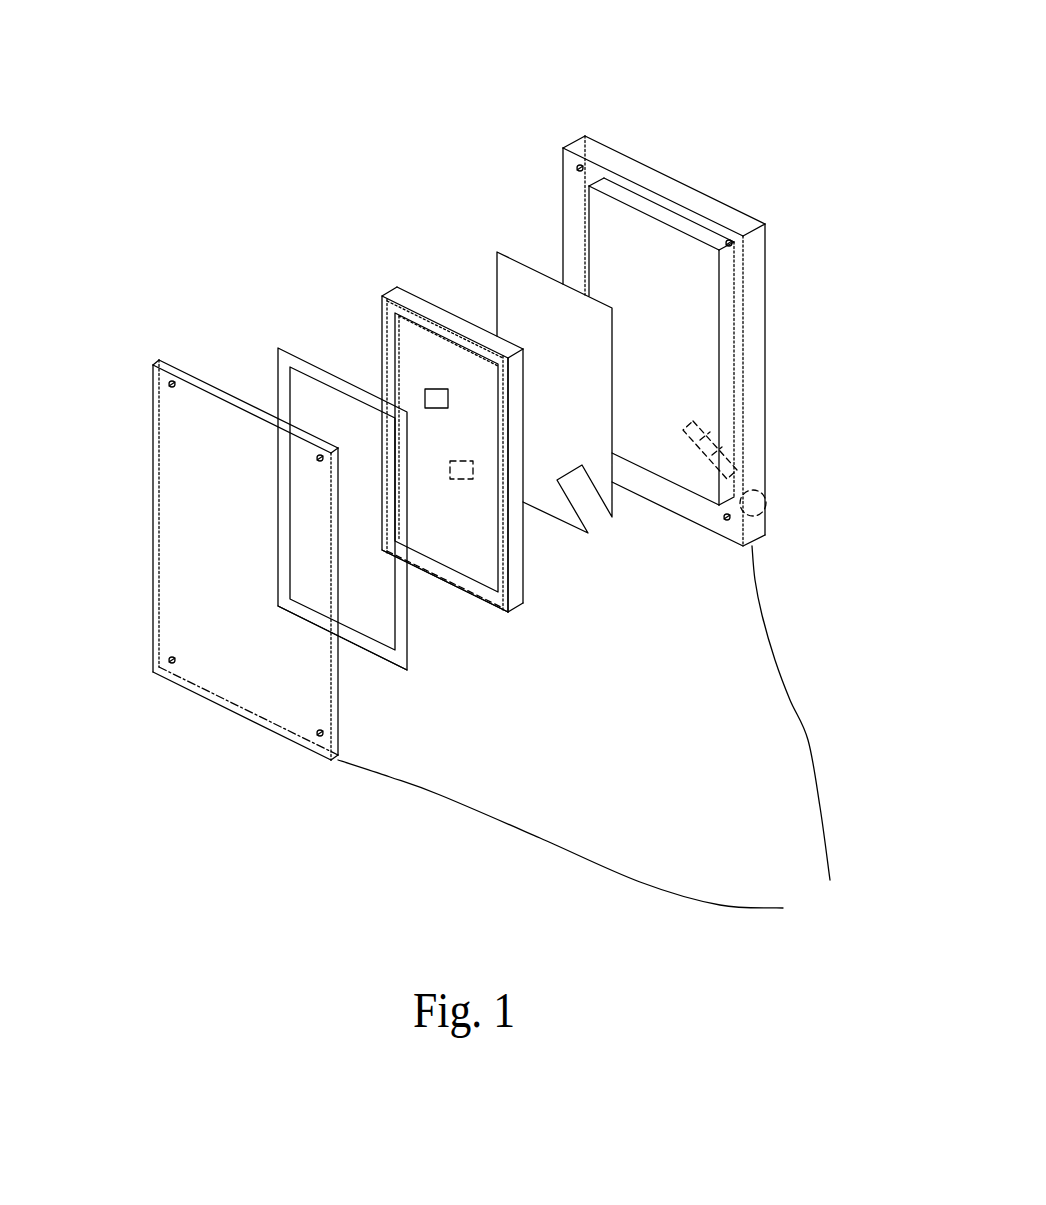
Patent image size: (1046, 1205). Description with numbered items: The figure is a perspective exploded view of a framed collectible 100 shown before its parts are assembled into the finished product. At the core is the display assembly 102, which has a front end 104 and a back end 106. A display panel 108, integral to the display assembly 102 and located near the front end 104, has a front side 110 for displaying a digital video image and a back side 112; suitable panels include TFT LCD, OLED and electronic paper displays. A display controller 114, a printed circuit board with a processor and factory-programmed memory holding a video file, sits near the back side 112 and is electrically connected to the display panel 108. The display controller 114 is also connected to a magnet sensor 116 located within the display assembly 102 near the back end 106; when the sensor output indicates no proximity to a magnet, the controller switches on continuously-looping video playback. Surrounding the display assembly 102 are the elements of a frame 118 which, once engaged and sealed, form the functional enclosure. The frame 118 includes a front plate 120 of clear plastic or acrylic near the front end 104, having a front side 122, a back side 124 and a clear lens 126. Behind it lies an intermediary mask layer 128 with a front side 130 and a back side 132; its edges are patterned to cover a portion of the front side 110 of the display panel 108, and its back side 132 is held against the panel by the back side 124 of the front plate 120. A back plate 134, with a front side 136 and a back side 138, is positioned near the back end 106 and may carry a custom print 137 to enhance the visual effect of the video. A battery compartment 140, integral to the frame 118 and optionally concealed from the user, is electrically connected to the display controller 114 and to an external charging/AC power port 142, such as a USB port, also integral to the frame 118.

The framed collectible 100 is at (144, 71).
The display assembly 102 is at (450, 440).
The front end 104 is at (512, 613).
The back end 106 is at (523, 607).
The display panel 108 is at (465, 592).
The front side 110 is at (408, 365).
The back side 112 is at (468, 392).
The display controller 114 is at (437, 389).
The magnet sensor 116 is at (463, 479).
The frame 118 is at (783, 908).
The front plate 120 is at (180, 426).
The front side 122 is at (185, 632).
The back side 124 is at (203, 667).
The clear lens 126 is at (237, 565).
The intermediary mask layer 128 is at (401, 555).
The front side 130 is at (357, 647).
The back side 132 is at (383, 622).
The back plate 134 is at (738, 363).
The front side 136 is at (695, 522).
The custom print 137 is at (550, 278).
The back side 138 is at (693, 320).
The battery compartment 140 is at (703, 425).
The external charging/AC power port 142 is at (767, 507).